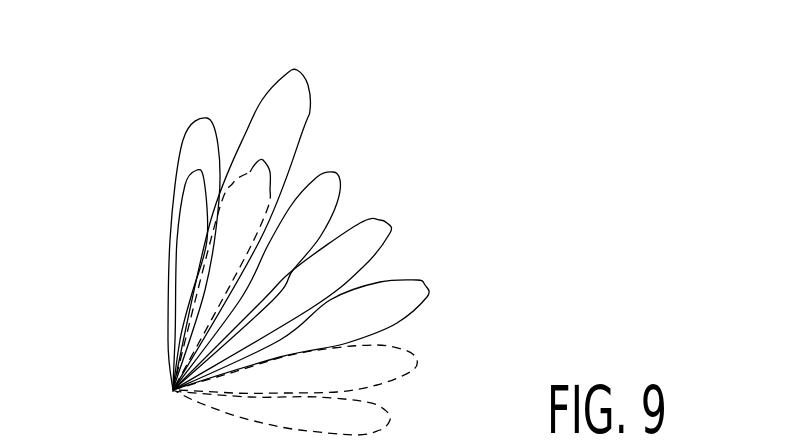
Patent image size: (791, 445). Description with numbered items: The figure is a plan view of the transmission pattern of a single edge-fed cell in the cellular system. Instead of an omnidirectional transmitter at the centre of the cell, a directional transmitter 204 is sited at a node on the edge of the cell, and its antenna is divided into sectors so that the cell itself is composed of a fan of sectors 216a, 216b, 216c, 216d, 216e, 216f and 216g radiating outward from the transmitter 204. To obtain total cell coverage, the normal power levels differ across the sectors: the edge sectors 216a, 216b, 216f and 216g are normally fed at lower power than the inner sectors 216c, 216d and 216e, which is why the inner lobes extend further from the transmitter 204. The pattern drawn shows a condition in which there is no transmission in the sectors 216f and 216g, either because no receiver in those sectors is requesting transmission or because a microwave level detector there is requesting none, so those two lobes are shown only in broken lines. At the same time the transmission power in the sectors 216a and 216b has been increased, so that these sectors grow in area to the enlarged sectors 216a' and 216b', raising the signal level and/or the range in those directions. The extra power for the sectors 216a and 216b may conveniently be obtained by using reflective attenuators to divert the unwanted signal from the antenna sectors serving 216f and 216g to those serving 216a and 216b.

The transmitter 204 is at (173, 390).
The enlarged cell sector 216a' is at (193, 221).
The cell sector 216a is at (150, 270).
The enlarged cell sector 216b' is at (245, 197).
The cell sector 216b is at (283, 251).
The cell sector 216c is at (333, 172).
The cell sector 216d is at (387, 223).
The cell sector 216e is at (425, 285).
The cell sector 216f is at (417, 360).
The cell sector 216g is at (390, 420).